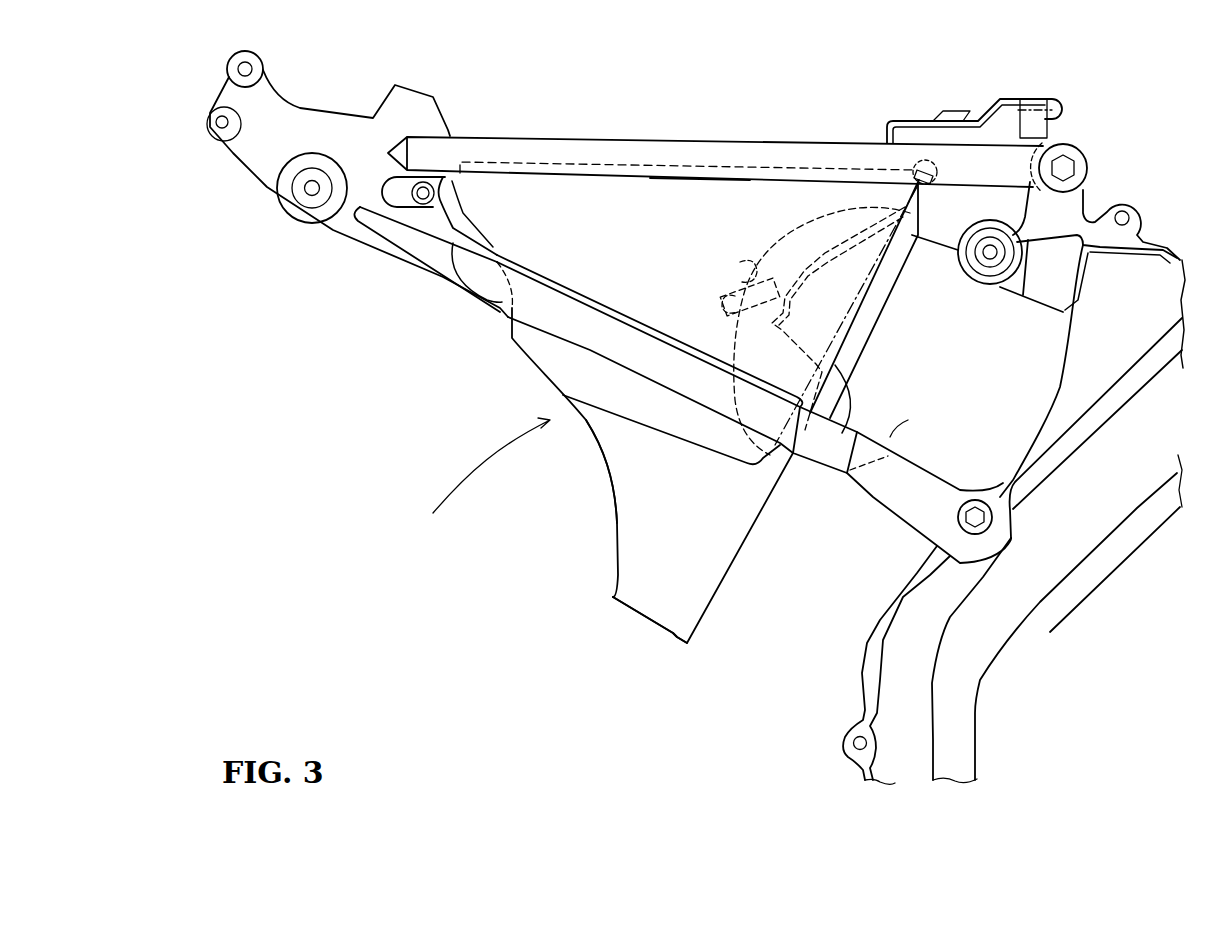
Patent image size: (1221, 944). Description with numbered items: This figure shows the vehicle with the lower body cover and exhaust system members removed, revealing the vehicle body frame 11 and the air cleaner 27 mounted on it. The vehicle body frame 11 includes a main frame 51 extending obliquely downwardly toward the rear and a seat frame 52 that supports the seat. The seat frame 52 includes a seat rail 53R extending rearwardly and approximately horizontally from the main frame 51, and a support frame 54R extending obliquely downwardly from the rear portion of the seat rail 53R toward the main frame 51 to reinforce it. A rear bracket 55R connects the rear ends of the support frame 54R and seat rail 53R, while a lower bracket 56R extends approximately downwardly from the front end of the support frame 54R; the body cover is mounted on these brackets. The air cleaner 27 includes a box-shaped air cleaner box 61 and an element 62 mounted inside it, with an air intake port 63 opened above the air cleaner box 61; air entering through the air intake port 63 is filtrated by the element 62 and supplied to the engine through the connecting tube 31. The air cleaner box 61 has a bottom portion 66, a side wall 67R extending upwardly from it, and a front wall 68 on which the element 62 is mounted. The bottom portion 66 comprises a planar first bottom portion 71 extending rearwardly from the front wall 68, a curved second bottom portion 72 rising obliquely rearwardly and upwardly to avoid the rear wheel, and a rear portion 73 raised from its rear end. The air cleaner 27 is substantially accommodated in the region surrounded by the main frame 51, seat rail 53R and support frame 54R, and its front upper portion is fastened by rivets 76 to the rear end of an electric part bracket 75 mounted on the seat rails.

The vehicle body frame 11 is at (870, 115).
The air cleaner 27 is at (480, 480).
The connecting tube 31 is at (927, 277).
The main frame 51 is at (992, 598).
The seat frame 52 is at (715, 177).
The seat rail 53R is at (643, 153).
The support frame 54R is at (547, 310).
The rear bracket 55R is at (315, 130).
The lower bracket 56R is at (853, 583).
The air cleaner box 61 is at (717, 233).
The element 62 is at (807, 223).
The air intake port 63 is at (693, 163).
The bottom portion 66 is at (581, 547).
The side wall 67R is at (620, 293).
The front wall 68 is at (822, 463).
The first bottom portion 71 is at (631, 633).
The second bottom portion 72 is at (610, 483).
The rear portion 73 is at (512, 286).
The electric part bracket 75 is at (980, 120).
The rivets 76 is at (930, 177).